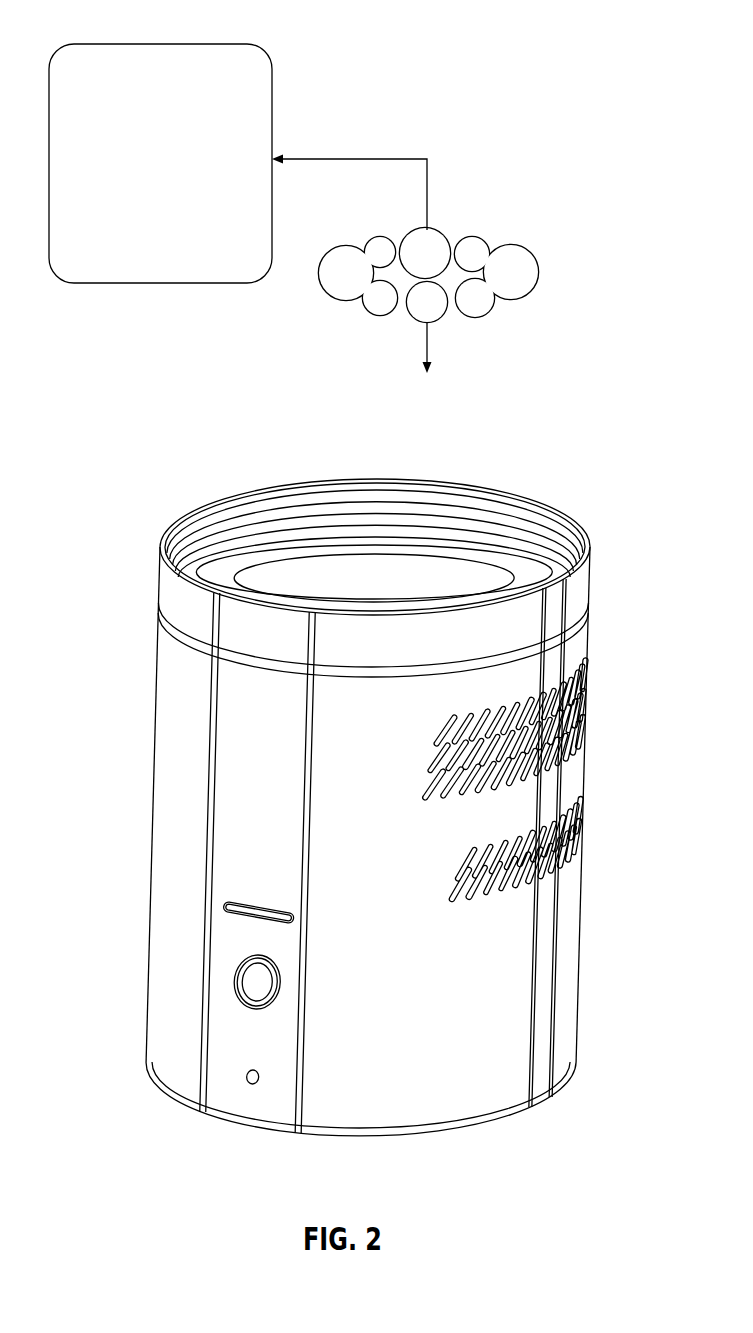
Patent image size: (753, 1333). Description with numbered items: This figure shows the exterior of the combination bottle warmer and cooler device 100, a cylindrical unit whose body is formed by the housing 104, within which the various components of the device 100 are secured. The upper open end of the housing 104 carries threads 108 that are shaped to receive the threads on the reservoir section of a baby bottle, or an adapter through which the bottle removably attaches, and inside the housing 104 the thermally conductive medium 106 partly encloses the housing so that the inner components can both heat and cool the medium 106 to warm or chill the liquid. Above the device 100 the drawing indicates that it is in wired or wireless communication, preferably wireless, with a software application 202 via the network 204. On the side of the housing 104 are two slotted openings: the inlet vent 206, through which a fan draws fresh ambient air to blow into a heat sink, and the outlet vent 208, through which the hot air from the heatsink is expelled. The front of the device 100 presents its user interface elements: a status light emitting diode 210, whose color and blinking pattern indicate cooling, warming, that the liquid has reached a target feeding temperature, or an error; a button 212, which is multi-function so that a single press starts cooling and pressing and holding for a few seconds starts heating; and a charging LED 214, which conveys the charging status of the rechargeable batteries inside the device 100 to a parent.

The combination bottle warmer and cooler device 100 is at (187, 432).
The housing 104 is at (153, 715).
The thermally conductive medium 106 is at (402, 597).
The threads 108 is at (373, 507).
The software application 202 is at (186, 44).
The network 204 is at (488, 238).
The inlet vent 206 is at (580, 857).
The outlet vent 208 is at (585, 740).
The status light emitting diode (LED) 210 is at (230, 912).
The button 212 is at (250, 978).
The charging LED 214 is at (240, 1085).